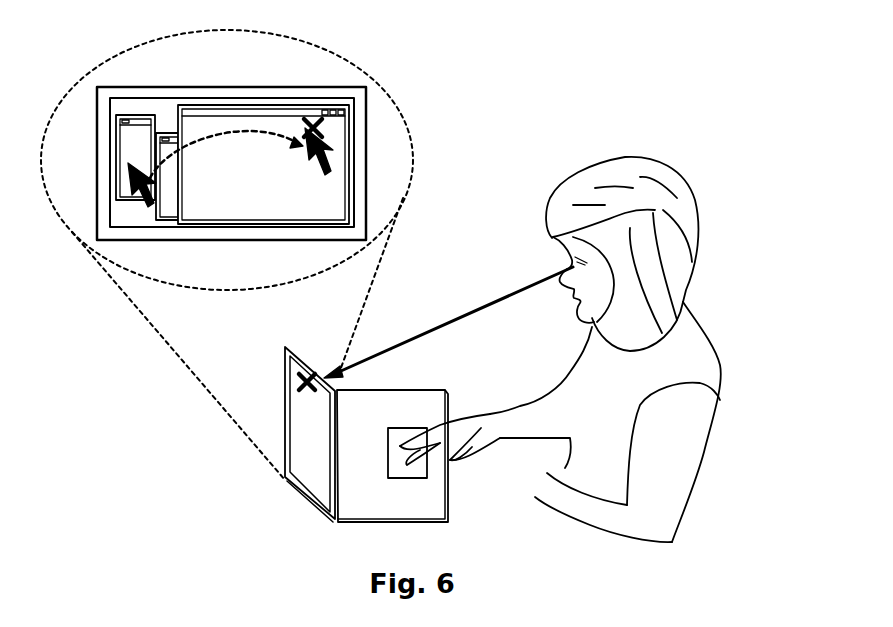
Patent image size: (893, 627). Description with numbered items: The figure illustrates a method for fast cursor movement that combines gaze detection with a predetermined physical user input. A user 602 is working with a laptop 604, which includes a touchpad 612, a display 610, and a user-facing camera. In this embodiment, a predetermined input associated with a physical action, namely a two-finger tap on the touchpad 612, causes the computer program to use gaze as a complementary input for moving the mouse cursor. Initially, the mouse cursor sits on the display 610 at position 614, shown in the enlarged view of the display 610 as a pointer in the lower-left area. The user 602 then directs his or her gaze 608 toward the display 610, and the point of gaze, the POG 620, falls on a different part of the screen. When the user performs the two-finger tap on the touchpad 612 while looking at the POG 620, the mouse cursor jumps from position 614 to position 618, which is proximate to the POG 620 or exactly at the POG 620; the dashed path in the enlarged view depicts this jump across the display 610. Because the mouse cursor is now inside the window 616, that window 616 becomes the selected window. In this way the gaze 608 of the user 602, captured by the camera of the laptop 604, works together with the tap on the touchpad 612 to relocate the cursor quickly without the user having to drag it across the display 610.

The user 602 is at (687, 495).
The laptop 604 is at (432, 505).
The gaze 608 is at (500, 299).
The display 610 is at (388, 132).
The touchpad 612 is at (395, 463).
The position 614 is at (130, 173).
The window 616 is at (195, 127).
The position 618 is at (306, 152).
The POG 620 is at (318, 118).